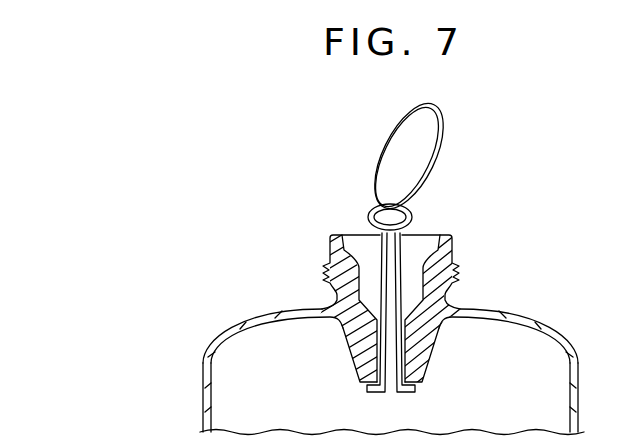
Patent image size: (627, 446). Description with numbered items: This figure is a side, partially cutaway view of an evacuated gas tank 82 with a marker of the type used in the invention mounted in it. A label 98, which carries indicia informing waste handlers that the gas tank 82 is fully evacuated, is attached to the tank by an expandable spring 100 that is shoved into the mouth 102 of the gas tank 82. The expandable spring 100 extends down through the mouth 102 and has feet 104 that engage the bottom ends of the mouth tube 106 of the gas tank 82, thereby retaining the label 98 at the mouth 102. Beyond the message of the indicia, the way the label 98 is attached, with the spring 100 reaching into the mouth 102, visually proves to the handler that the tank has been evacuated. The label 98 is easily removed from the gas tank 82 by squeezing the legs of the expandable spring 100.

The gas tank 82 is at (550, 335).
The label 98 is at (430, 163).
The expandable spring 100 is at (423, 260).
The mouth 102 is at (358, 245).
The feet 104 is at (408, 392).
The mouth tube 106 is at (422, 354).